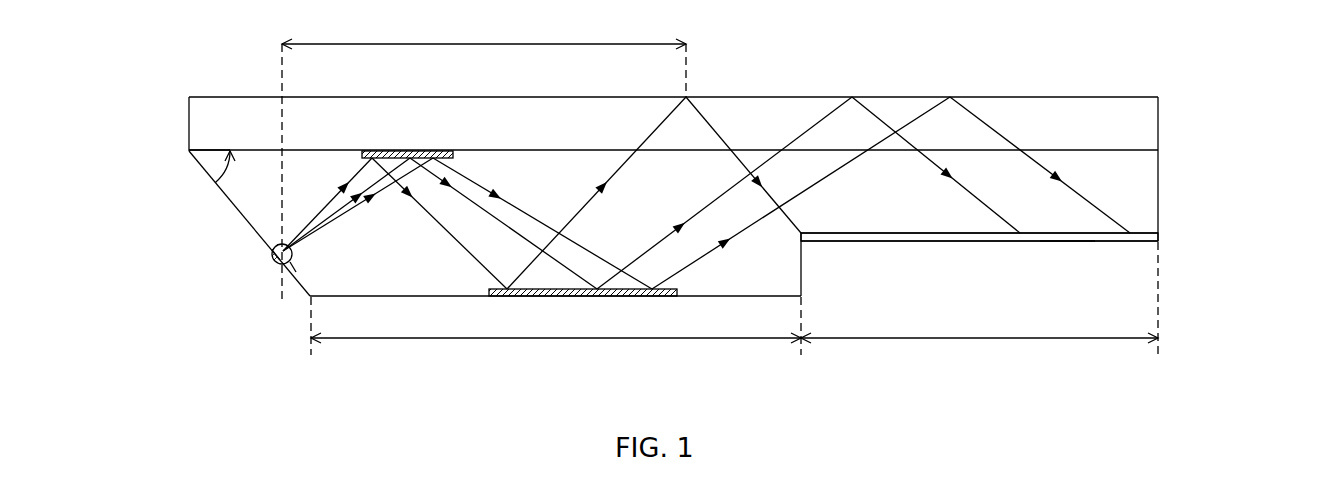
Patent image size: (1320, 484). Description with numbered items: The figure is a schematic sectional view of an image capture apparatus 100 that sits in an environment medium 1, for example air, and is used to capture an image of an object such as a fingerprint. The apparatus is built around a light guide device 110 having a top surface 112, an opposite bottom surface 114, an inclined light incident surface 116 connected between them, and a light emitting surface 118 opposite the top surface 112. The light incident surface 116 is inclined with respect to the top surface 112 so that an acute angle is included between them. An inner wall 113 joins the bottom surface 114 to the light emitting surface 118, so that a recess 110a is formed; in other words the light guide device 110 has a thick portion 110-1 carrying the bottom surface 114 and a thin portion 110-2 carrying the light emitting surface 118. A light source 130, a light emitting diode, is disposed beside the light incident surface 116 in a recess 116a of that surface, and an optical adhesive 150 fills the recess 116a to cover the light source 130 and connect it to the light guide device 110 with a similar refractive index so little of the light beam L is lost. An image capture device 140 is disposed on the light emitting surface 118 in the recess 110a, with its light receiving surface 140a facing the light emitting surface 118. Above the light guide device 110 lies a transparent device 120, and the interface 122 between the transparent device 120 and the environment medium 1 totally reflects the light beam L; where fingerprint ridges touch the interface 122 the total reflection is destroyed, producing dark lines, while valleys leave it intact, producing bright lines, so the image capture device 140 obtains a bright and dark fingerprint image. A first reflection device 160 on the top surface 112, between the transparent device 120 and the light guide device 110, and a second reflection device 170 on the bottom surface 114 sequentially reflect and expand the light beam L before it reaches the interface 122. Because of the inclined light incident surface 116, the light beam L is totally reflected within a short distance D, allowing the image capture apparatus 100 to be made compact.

The environment medium 1 is at (181, 41).
The image capture apparatus 100 is at (1247, 407).
The light guide device 110 is at (1147, 195).
The thick portion 110-1 is at (556, 335).
The thin portion 110-2 is at (979, 308).
The recess 110a is at (927, 254).
The top surface 112 is at (218, 149).
The inner wall 113 is at (803, 261).
The bottom surface 114 is at (342, 298).
The light incident surface 116 is at (236, 208).
The recess 116a is at (273, 252).
The light emitting surface 118 is at (1067, 243).
The transparent device 120 is at (1140, 125).
The interface 122 is at (1122, 96).
The light source 130 is at (287, 267).
The image capture device 140 is at (1147, 238).
The light receiving surface 140a is at (1123, 232).
The optical adhesive 150 is at (294, 273).
The first reflection device 160 is at (405, 151).
The second reflection device 170 is at (573, 297).
The light beam L is at (808, 130).
The distance D is at (484, 157).